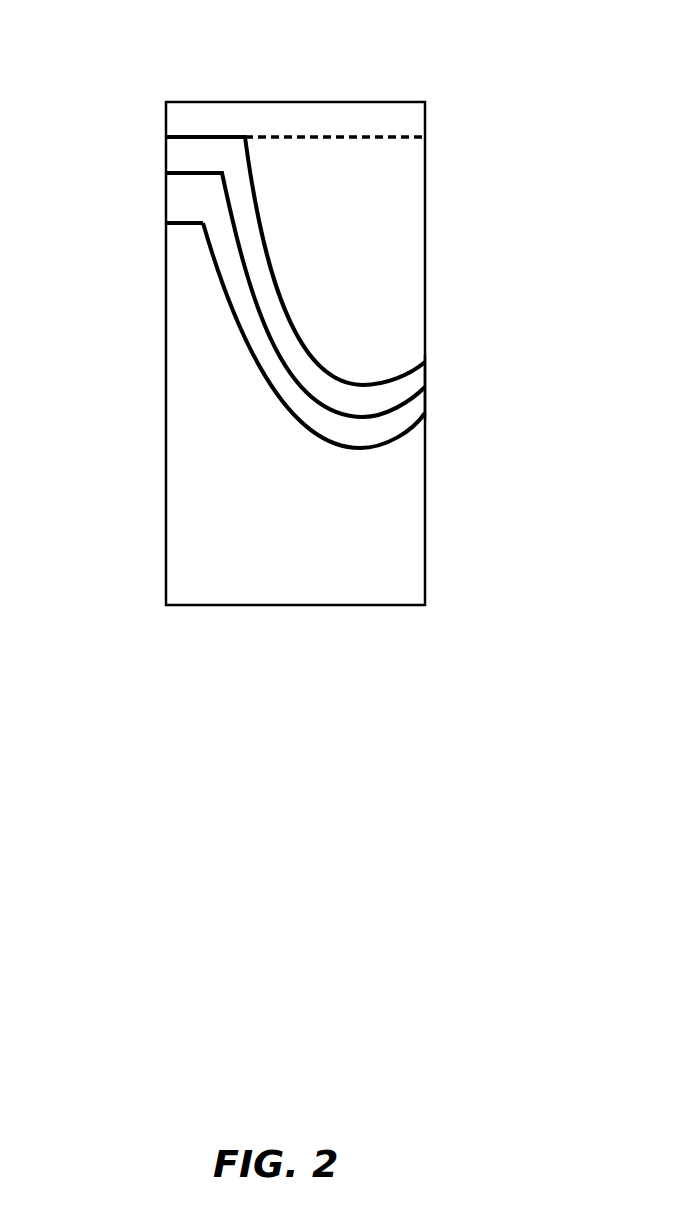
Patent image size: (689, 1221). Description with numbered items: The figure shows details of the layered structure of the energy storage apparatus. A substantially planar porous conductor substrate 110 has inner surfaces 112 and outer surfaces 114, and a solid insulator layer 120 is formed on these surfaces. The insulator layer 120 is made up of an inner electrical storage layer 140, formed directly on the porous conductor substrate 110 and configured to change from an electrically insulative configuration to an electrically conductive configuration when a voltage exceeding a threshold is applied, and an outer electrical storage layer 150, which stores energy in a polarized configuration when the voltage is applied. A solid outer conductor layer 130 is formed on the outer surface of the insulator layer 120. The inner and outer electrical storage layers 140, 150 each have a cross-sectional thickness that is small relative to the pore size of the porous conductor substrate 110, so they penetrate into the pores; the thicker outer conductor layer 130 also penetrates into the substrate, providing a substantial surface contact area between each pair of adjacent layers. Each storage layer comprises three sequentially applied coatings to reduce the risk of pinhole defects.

The porous conductor substrate 110 is at (268, 439).
The inner surfaces 112 is at (389, 477).
The outer surfaces 114 is at (201, 198).
The insulator layer 120 is at (450, 375).
The outer conductor layer 130 is at (347, 123).
The inner electrical storage layer 140 is at (170, 208).
The outer electrical storage layer 150 is at (187, 153).